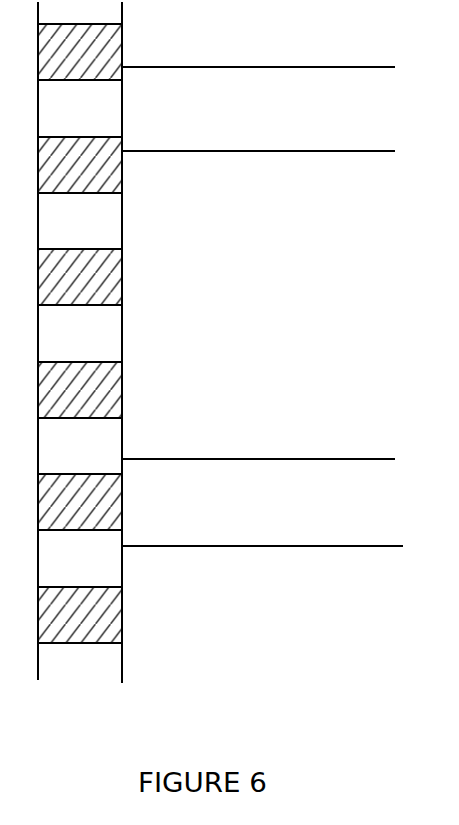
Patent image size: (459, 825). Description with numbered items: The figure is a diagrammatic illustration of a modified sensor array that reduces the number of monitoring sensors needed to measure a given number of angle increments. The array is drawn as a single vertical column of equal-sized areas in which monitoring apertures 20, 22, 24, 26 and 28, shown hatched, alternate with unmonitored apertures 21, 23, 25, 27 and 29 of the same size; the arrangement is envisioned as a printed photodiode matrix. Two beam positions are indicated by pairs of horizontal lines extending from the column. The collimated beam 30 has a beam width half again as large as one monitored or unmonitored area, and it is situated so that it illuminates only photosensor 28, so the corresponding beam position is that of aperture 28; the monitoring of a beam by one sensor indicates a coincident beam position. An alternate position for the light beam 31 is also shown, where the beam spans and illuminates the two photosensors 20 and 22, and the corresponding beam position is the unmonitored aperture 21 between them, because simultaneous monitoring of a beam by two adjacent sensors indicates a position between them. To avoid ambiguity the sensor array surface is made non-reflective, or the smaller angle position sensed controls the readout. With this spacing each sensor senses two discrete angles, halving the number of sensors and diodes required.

The monitoring aperture 20 is at (80, 52).
The unmonitored aperture 21 is at (80, 108).
The monitoring aperture 22 is at (80, 165).
The unmonitored aperture 23 is at (80, 221).
The monitoring aperture 24 is at (80, 277).
The unmonitored aperture 25 is at (80, 333).
The monitoring aperture 26 is at (80, 390).
The unmonitored aperture 27 is at (80, 446).
The monitoring aperture 28 is at (80, 502).
The unmonitored aperture 29 is at (80, 558).
The collimated light beam 30 is at (220, 551).
The alternate light beam position 31 is at (258, 109).